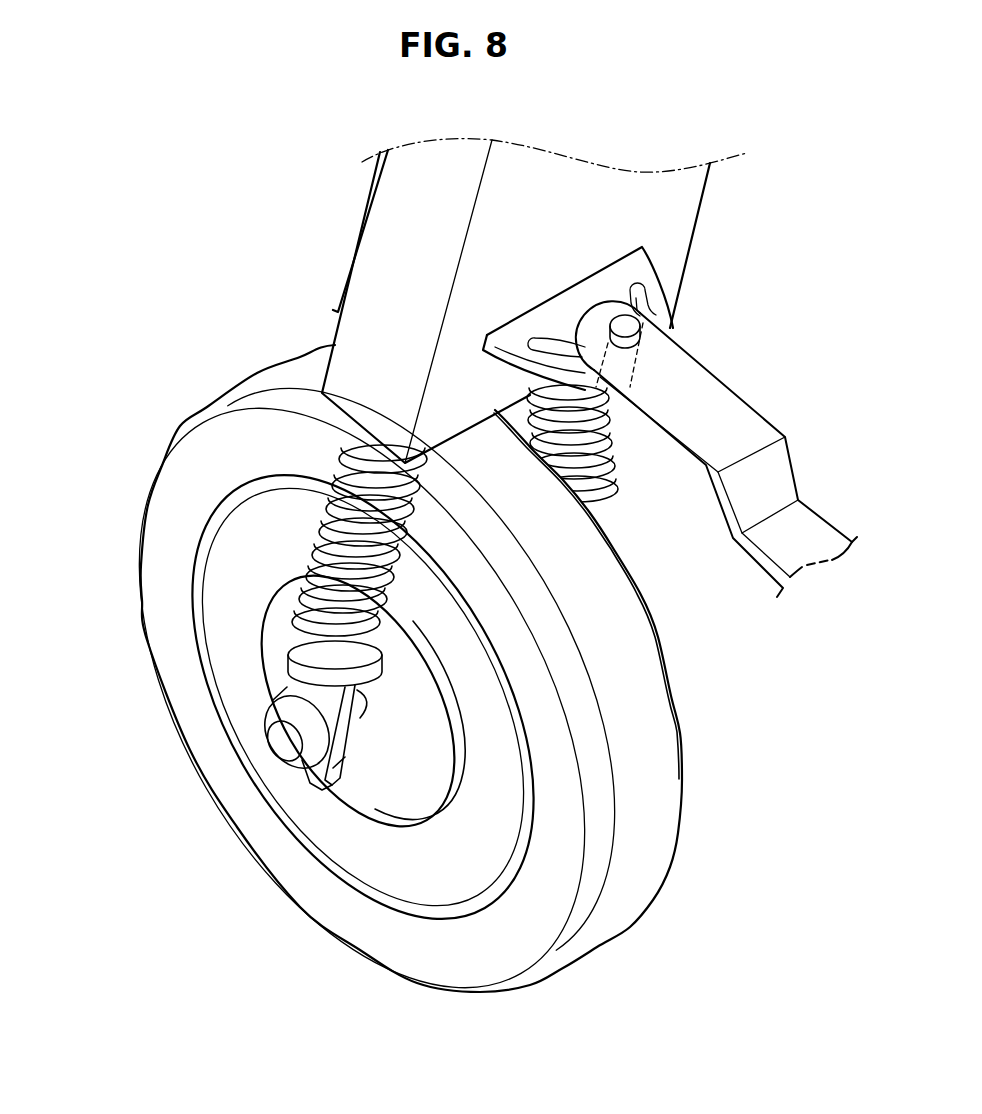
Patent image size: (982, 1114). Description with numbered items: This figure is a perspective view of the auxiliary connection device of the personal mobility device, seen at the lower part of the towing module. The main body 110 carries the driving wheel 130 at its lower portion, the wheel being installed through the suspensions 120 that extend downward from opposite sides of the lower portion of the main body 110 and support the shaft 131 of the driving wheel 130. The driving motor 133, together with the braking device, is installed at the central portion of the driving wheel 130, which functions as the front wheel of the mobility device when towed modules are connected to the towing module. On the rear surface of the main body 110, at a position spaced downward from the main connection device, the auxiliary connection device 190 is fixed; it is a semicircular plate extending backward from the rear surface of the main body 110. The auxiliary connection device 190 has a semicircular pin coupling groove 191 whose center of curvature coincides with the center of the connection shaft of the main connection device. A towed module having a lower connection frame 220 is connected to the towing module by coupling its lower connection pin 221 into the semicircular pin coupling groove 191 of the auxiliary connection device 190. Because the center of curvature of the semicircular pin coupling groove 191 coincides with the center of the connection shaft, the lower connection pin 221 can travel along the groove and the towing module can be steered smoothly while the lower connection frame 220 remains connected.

The main body 110 is at (378, 247).
The suspensions 120 is at (323, 573).
The driving wheel 130 is at (416, 946).
The shaft 131 is at (283, 745).
The driving motor 133 is at (362, 794).
The auxiliary connection device 190 is at (668, 246).
The semicircular pin coupling groove 191 is at (644, 285).
The lower connection frame 220 is at (743, 420).
The lower connection pin 221 is at (628, 330).